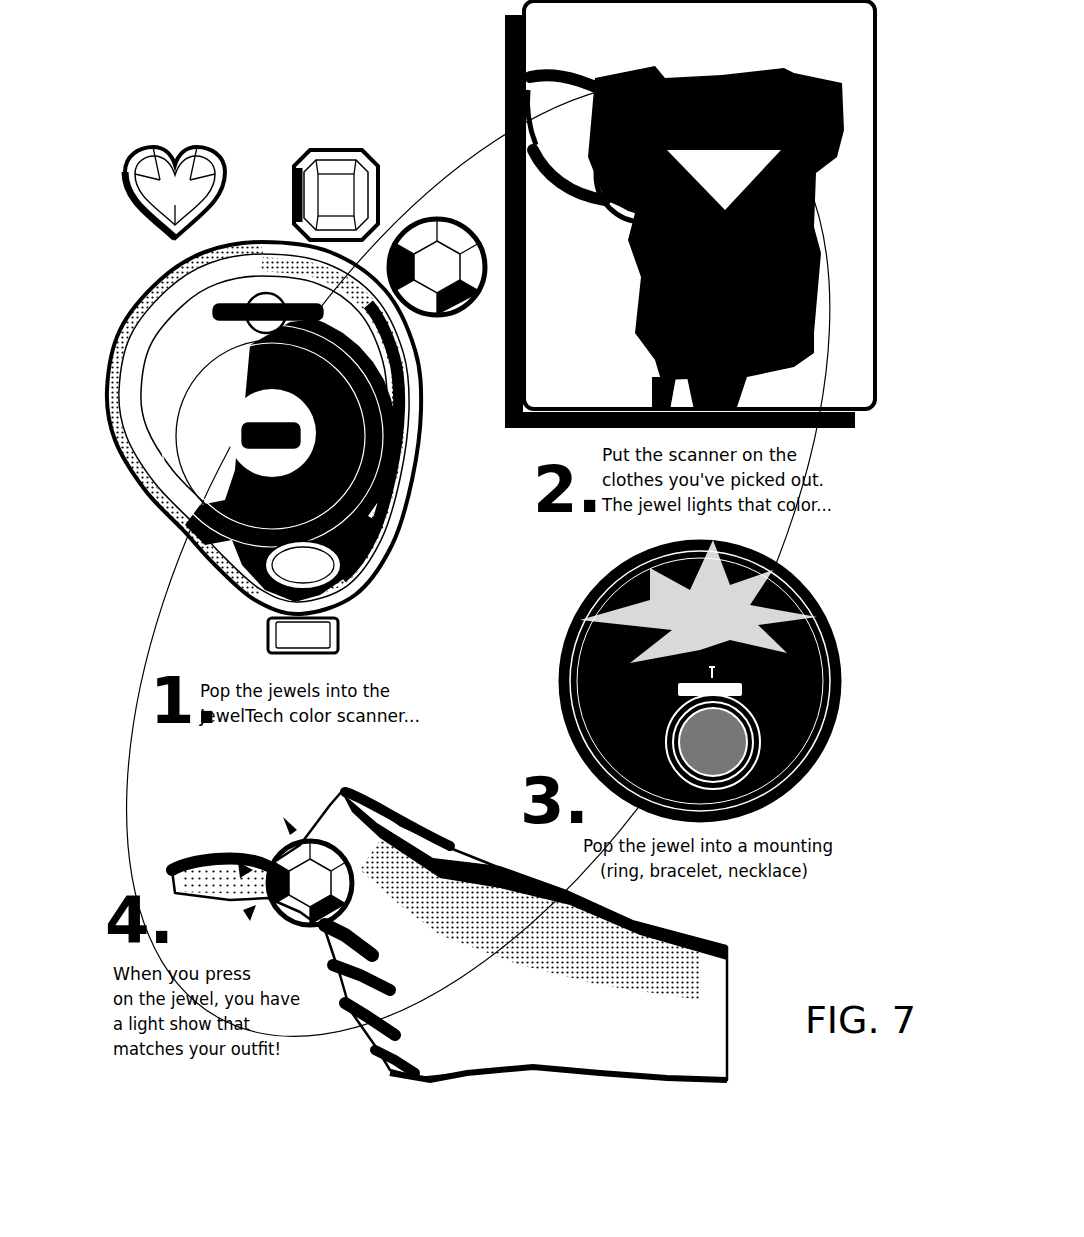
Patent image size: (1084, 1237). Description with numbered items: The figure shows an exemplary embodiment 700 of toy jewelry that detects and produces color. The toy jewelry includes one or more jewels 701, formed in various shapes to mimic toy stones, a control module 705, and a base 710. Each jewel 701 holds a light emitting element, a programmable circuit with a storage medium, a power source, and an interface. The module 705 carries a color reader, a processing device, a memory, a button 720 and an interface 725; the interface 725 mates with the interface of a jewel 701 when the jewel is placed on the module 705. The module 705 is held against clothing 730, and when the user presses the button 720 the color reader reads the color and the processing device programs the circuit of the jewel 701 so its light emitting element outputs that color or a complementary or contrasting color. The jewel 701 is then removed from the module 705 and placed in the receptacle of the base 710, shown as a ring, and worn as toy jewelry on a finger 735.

The exemplary embodiment 700 is at (327, 100).
The jewel 701 is at (196, 201).
The control module 705 is at (398, 390).
The base 710 is at (760, 720).
The button 720 is at (321, 577).
The interface 725 is at (258, 390).
The clothes 730 is at (643, 302).
The finger 735 is at (537, 989).